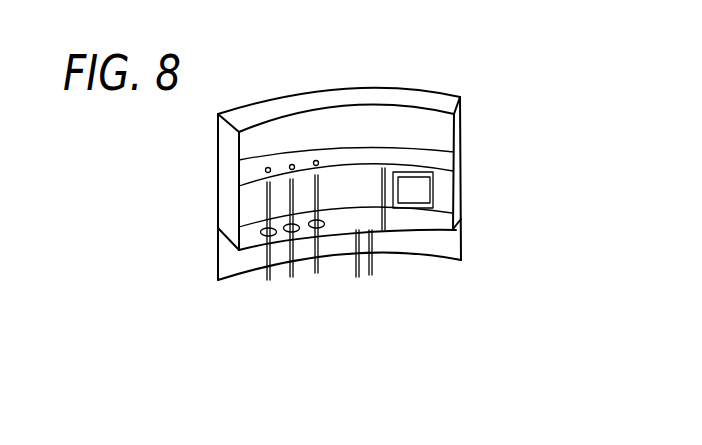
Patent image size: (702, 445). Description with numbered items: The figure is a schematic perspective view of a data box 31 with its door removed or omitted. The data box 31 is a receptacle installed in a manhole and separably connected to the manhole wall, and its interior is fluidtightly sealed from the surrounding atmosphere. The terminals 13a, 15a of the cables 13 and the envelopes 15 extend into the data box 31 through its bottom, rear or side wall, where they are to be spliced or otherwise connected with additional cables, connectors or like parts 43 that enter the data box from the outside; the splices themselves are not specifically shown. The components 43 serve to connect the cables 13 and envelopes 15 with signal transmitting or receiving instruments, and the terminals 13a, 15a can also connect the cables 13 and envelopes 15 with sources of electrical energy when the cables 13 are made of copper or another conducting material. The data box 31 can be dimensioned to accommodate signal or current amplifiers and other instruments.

The data box 31 is at (490, 107).
The cables 13 is at (243, 251).
The envelopes 15 is at (263, 253).
The terminals of the cables 13a is at (352, 117).
The terminals of the envelopes 15a is at (317, 198).
The additional cables or components 43 is at (371, 247).